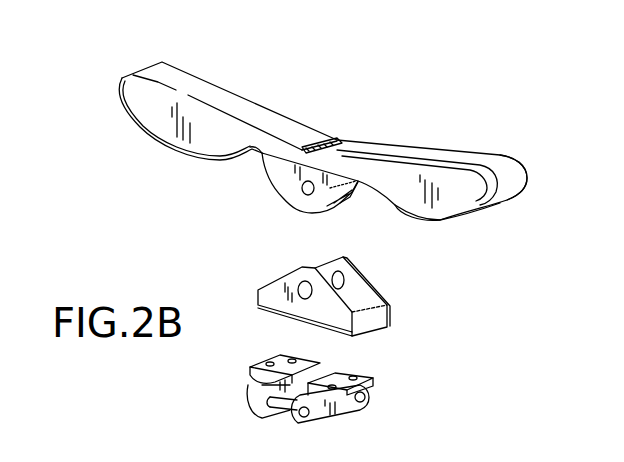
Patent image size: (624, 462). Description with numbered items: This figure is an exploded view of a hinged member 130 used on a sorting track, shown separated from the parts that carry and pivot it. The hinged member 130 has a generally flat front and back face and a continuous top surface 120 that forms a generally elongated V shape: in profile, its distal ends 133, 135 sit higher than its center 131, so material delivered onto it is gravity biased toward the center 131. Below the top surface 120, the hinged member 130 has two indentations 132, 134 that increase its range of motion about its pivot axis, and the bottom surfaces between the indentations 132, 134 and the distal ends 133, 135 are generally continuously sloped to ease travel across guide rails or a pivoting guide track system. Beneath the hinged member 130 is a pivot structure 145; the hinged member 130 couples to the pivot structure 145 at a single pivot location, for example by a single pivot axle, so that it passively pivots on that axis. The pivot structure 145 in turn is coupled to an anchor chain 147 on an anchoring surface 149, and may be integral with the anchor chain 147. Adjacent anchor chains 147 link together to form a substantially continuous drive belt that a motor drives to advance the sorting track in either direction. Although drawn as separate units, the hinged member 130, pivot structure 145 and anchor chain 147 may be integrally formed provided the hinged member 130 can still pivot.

The top surface 120 is at (443, 152).
The hinged member 130 is at (470, 197).
The center 131 is at (337, 140).
The indentation 132 is at (367, 183).
The distal end 133 is at (522, 170).
The indentation 134 is at (257, 153).
The distal end 135 is at (140, 70).
The pivot structure 145 is at (343, 318).
The anchor chain 147 is at (353, 412).
The anchoring surface 149 is at (367, 378).